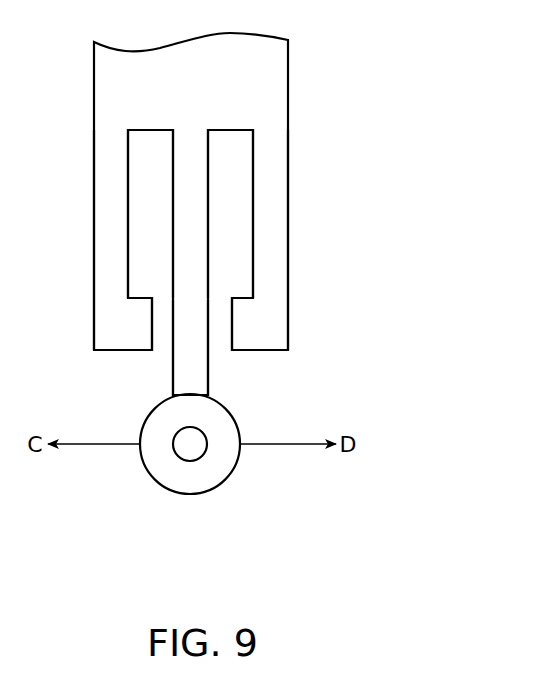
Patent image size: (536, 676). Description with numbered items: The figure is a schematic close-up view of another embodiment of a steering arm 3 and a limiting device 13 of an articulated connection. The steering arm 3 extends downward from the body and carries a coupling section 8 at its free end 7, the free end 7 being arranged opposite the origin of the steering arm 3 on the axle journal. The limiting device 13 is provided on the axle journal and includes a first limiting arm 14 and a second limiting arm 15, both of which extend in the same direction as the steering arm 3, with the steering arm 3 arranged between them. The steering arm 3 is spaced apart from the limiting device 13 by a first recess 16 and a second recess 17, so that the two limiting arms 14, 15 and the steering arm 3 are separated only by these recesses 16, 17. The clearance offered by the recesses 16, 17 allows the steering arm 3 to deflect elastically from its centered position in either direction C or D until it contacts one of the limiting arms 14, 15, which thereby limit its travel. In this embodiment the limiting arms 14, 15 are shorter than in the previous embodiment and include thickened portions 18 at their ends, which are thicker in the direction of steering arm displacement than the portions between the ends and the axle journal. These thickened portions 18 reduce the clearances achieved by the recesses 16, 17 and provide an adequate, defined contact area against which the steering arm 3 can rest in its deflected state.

The limiting device 13 is at (414, 343).
The first limiting arm 14 is at (105, 277).
The second limiting arm 15 is at (278, 240).
The first recess 16 is at (146, 257).
The second recess 17 is at (234, 221).
The thickened portions 18 is at (117, 334).
The steering arm 3 is at (213, 378).
The free end 7 is at (171, 508).
The coupling section 8 is at (206, 501).